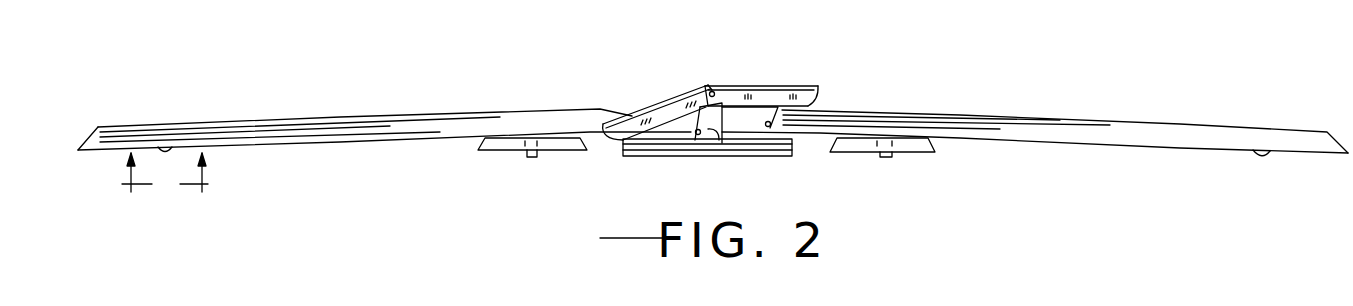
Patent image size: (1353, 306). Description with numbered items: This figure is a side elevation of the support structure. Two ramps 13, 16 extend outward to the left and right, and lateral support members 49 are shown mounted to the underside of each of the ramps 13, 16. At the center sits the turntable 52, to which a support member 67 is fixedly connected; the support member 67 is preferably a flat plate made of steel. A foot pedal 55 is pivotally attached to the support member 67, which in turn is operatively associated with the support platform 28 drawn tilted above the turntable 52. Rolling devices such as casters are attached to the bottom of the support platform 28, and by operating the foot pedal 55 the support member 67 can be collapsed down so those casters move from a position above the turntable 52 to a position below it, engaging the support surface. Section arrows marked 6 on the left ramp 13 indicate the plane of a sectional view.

The section line 6- 6 is at (164, 186).
The ramp 13 is at (367, 128).
The ramp 16 is at (1027, 128).
The support platform 28 is at (677, 125).
The lateral support member 49 is at (500, 146).
The turntable 52 is at (663, 147).
The foot pedal 55 is at (765, 95).
The support member 67 is at (727, 137).